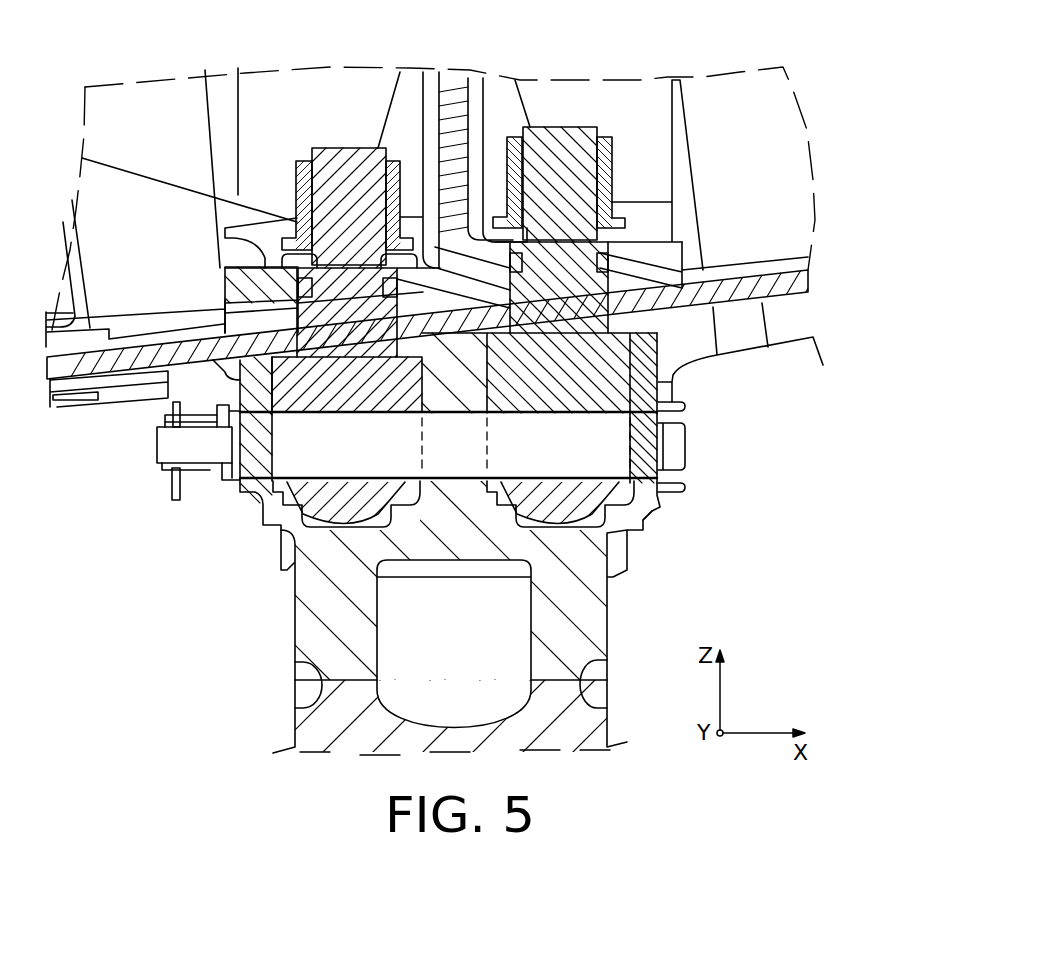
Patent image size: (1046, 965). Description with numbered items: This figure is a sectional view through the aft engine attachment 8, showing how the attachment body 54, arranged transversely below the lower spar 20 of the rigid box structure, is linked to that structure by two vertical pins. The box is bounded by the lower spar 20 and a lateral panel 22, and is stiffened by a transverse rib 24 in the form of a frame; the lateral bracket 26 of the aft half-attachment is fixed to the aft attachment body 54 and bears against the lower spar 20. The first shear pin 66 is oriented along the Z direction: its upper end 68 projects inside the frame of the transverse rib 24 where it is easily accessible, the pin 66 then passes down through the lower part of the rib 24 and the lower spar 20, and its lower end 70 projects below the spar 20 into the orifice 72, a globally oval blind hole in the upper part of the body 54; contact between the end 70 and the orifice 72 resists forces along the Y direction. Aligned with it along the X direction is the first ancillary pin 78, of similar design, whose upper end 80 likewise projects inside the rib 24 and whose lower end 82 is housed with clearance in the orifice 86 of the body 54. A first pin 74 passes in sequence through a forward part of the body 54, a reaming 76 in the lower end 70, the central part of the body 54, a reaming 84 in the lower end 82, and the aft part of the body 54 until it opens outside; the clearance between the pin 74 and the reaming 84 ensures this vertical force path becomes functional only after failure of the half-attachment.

The aft engine attachment 8 is at (820, 242).
The lower spar 20 is at (70, 372).
The lateral panel 22 is at (135, 210).
The transverse rib 24 is at (455, 103).
The lateral bracket 26 is at (787, 325).
The aft attachment body 54 is at (610, 620).
The first shear pin 66 is at (342, 505).
The upper end of the shear pin 68 is at (330, 163).
The lower end of the shear pin 70 is at (240, 390).
The orifice 72 is at (340, 413).
The first pin 74 is at (253, 473).
The reaming 76 is at (255, 467).
The first ancillary pin 78 is at (631, 372).
The upper end of the ancillary pin 80 is at (568, 145).
The lower end of the ancillary pin 82 is at (637, 510).
The reaming 84 is at (573, 412).
The orifice 86 is at (280, 433).